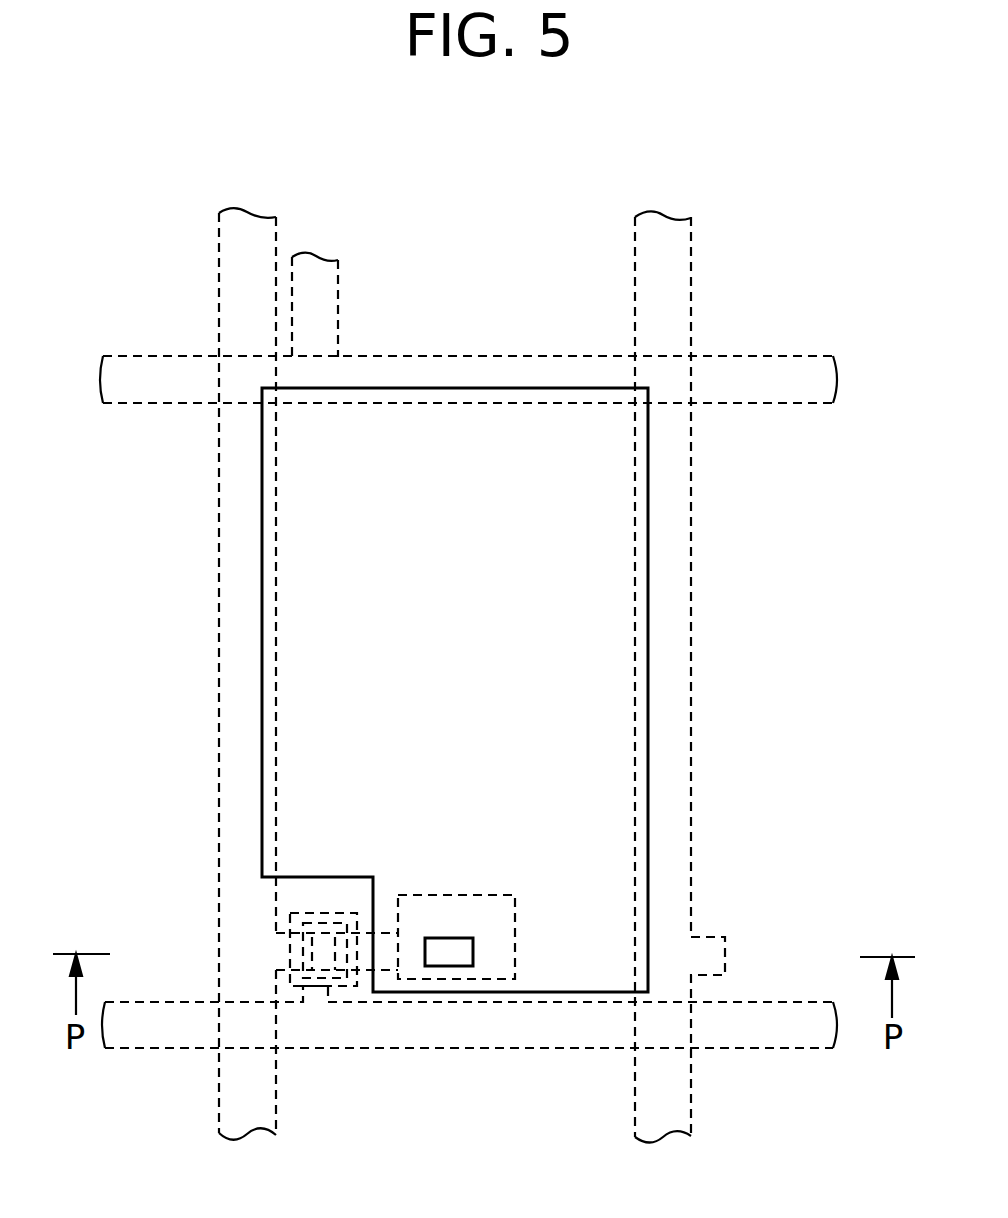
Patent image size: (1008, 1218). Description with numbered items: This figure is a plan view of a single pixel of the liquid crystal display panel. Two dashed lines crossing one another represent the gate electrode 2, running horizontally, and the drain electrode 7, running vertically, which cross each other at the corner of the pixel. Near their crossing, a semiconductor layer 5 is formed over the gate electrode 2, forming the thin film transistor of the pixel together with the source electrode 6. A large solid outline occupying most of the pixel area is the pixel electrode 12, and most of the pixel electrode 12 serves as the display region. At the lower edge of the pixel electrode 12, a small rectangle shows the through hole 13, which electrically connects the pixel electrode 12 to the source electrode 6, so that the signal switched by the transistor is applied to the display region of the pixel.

The gate electrode 2 is at (770, 365).
The drain electrode 7 is at (691, 240).
The pixel electrode 12 is at (648, 582).
The through hole 13 is at (453, 966).
The semiconductor layer 5 is at (328, 1002).
The source electrode 6 is at (400, 980).